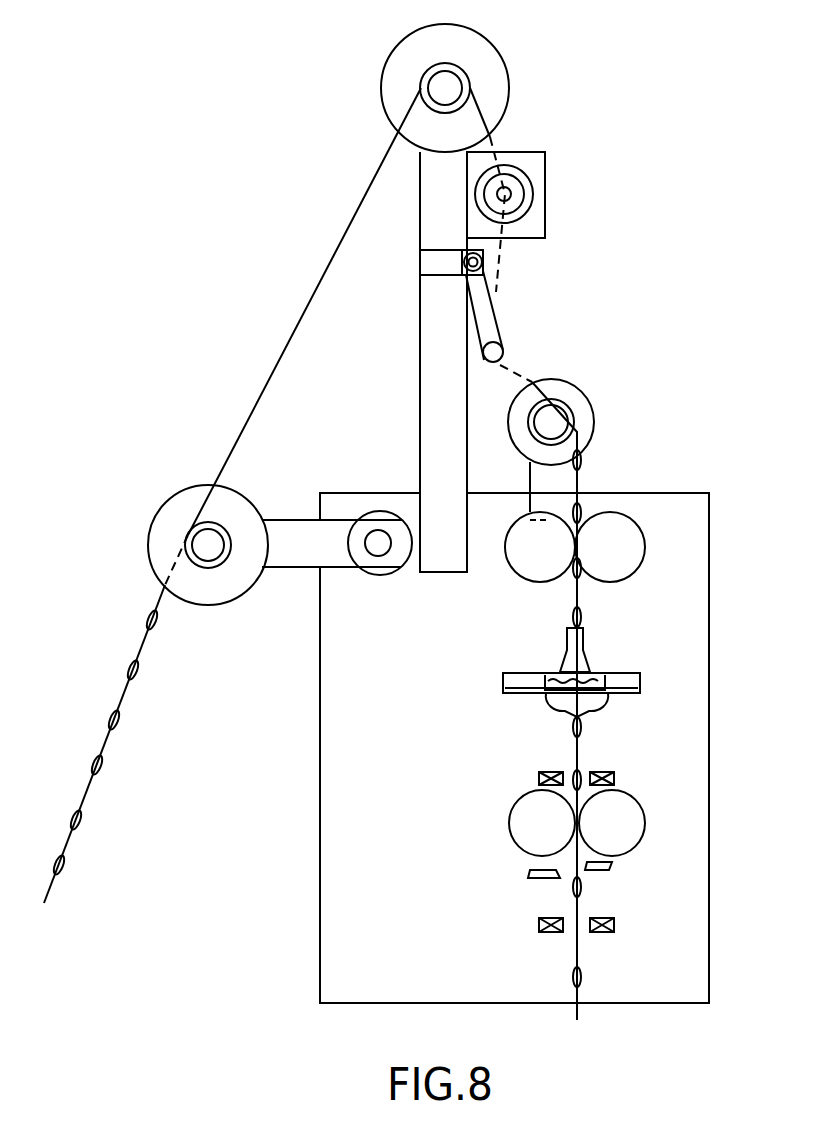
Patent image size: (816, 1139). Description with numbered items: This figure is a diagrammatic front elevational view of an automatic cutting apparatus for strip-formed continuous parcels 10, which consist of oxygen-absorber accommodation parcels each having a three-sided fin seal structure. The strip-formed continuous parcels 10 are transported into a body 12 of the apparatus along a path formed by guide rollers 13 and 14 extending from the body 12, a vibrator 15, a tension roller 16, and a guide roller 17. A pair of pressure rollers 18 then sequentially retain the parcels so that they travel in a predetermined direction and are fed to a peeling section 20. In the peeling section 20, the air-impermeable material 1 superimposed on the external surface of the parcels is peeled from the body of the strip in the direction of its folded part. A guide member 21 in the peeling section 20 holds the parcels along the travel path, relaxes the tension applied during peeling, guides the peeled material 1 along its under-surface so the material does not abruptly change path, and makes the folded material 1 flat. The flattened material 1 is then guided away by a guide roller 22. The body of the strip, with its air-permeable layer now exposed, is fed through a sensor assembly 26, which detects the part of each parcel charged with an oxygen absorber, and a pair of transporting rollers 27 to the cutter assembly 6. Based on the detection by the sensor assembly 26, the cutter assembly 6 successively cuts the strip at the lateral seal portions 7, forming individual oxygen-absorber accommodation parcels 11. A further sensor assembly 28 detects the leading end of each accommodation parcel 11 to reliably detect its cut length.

The air-impermeable material 1 is at (596, 690).
The cutter assembly 6 is at (596, 866).
The lateral seal portions 7 is at (548, 860).
The strip-formed continuous parcels 10 is at (102, 762).
The oxygen-absorber accommodation parcels 11 is at (572, 977).
The body 12 is at (333, 845).
The guide roller 13 is at (185, 508).
The guide roller 14 is at (497, 58).
The vibrator 15 is at (520, 196).
The tension roller 16 is at (497, 335).
The guide roller 17 is at (580, 398).
The pressure rollers 18 is at (620, 517).
The peeling section 20 is at (510, 668).
The guide member 21 is at (584, 655).
The guide roller 22 is at (640, 690).
The sensor assembly 26 is at (605, 772).
The transporting rollers 27 is at (640, 815).
The sensor assembly 28 is at (615, 925).